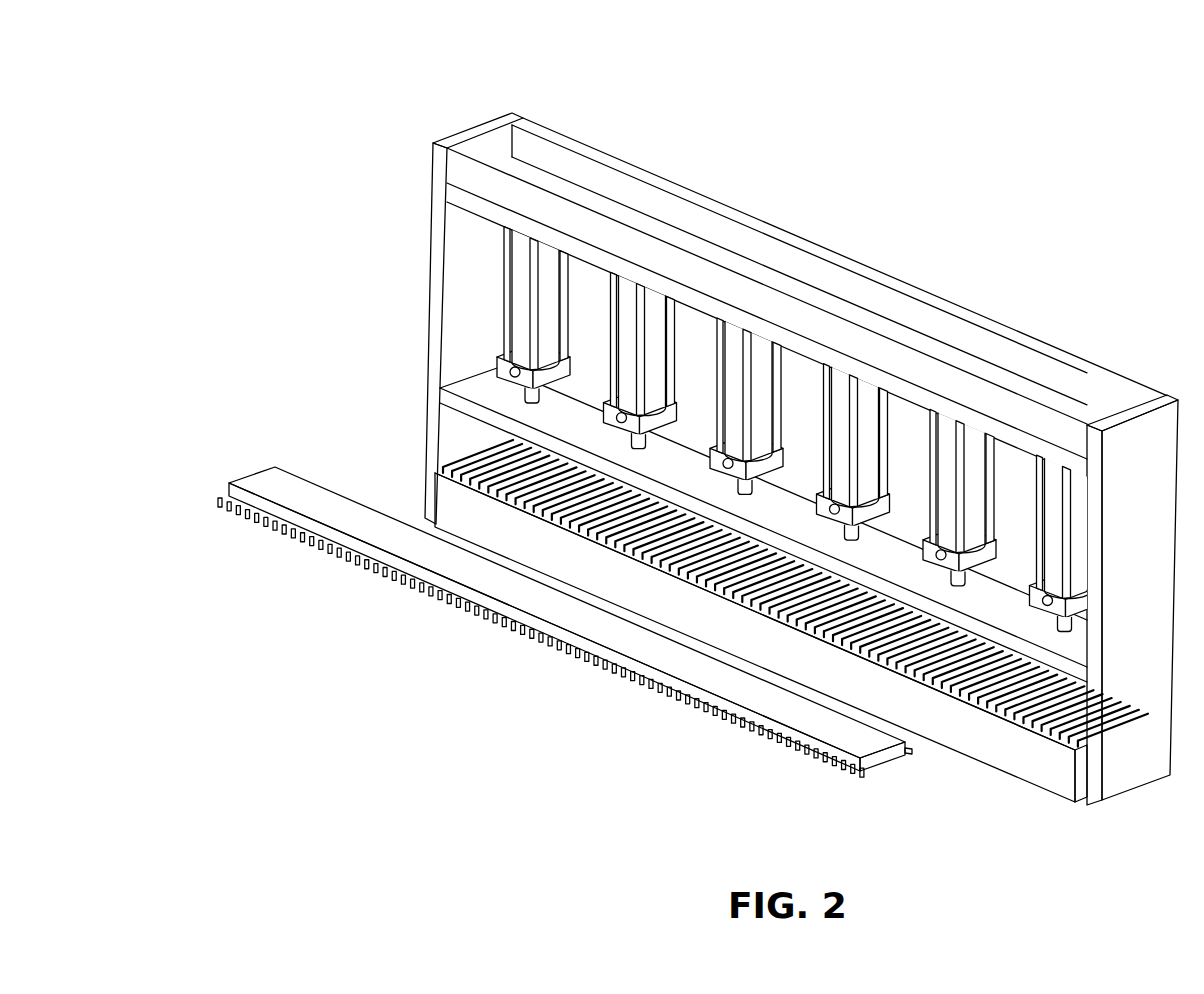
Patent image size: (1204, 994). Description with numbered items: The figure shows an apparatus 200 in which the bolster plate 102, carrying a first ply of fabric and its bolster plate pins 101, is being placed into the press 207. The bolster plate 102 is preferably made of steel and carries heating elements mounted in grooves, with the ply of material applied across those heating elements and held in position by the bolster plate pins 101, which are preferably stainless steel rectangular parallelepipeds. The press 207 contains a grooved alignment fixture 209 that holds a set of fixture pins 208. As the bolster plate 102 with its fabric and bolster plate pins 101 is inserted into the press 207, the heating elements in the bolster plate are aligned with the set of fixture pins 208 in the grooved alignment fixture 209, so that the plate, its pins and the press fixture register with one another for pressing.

The apparatus 200 is at (449, 26).
The press 207 is at (1057, 780).
The fixture pins 208 is at (1015, 728).
The grooved alignment fixture 209 is at (1038, 733).
The bolster plate pins 101 is at (827, 770).
The bolster plate 102 is at (780, 728).